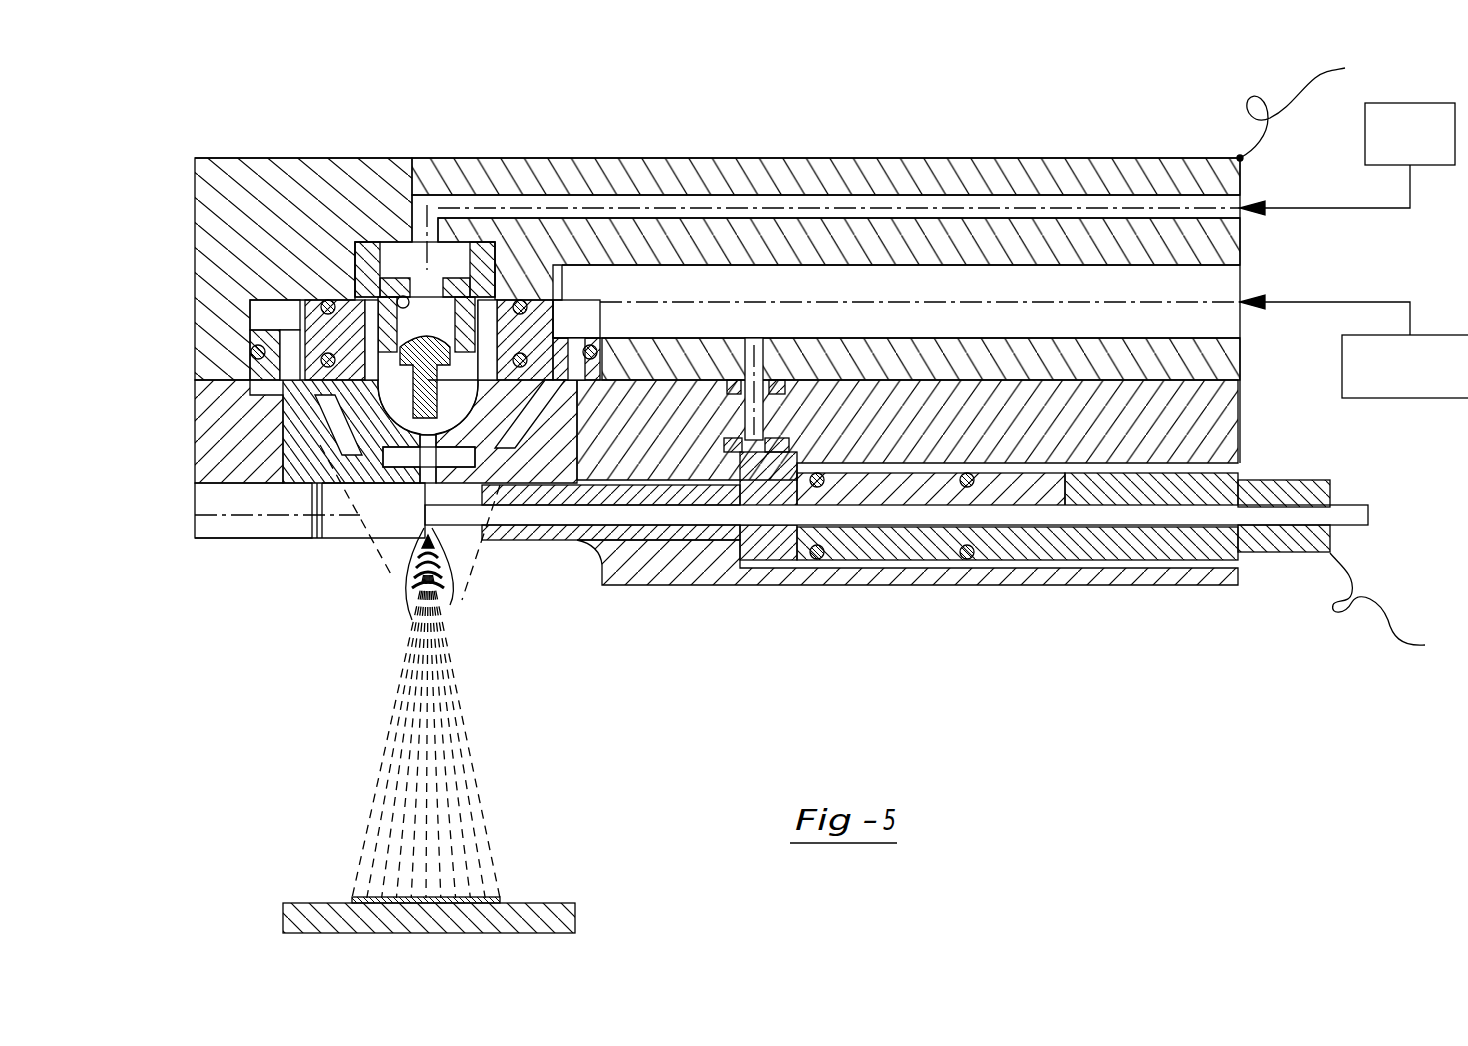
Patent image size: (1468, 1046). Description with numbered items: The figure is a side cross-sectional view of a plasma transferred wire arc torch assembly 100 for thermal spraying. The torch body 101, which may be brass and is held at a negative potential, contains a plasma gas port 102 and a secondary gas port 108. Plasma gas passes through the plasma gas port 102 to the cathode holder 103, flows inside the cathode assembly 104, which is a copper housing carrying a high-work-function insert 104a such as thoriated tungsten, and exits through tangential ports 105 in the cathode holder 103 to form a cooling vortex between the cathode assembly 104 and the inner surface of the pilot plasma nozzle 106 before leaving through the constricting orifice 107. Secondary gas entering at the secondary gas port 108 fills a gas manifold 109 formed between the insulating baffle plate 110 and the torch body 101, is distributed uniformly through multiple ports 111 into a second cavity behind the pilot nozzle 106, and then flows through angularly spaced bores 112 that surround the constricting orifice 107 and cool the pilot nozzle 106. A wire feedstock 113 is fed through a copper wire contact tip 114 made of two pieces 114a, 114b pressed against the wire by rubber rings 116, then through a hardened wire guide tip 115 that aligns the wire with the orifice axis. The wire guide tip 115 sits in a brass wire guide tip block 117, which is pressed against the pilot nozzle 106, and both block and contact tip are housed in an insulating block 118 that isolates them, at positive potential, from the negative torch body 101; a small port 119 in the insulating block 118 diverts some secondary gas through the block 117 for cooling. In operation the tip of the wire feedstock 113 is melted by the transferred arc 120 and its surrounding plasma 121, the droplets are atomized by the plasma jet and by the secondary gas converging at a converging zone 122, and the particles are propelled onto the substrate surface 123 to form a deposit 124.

The plasma transferred wire arc torch assembly 100 is at (778, 152).
The torch body 101 is at (1075, 160).
The plasma gas port 102 is at (1060, 208).
The cathode holder 103 is at (347, 240).
The cathode assembly 104 is at (285, 393).
The insert 104a is at (455, 470).
The tangential ports 105 is at (402, 300).
The pilot plasma nozzle 106 is at (340, 425).
The constricting orifice 107 is at (377, 385).
The secondary gas port 108 is at (905, 300).
The gas manifold 109 is at (580, 315).
The baffle plate 110 is at (522, 298).
The multiple ports 111 is at (262, 315).
The angularly spaced bores 112 is at (290, 455).
The wire feedstock 113 is at (445, 525).
The wire contact tip 114 is at (1277, 552).
The wire contact tip piece 114a is at (1155, 550).
The wire contact tip piece 114b is at (905, 495).
The wire guide tip 115 is at (700, 563).
The rubber rings 116 is at (967, 558).
The wire guide tip block 117 is at (650, 587).
The insulating block 118 is at (877, 435).
The small port 119 is at (770, 560).
The transferred arc 120 is at (423, 455).
The plasma 121 is at (430, 500).
The converging zone 122 is at (428, 545).
The substrate surface 123 is at (285, 903).
The deposit 124 is at (352, 897).